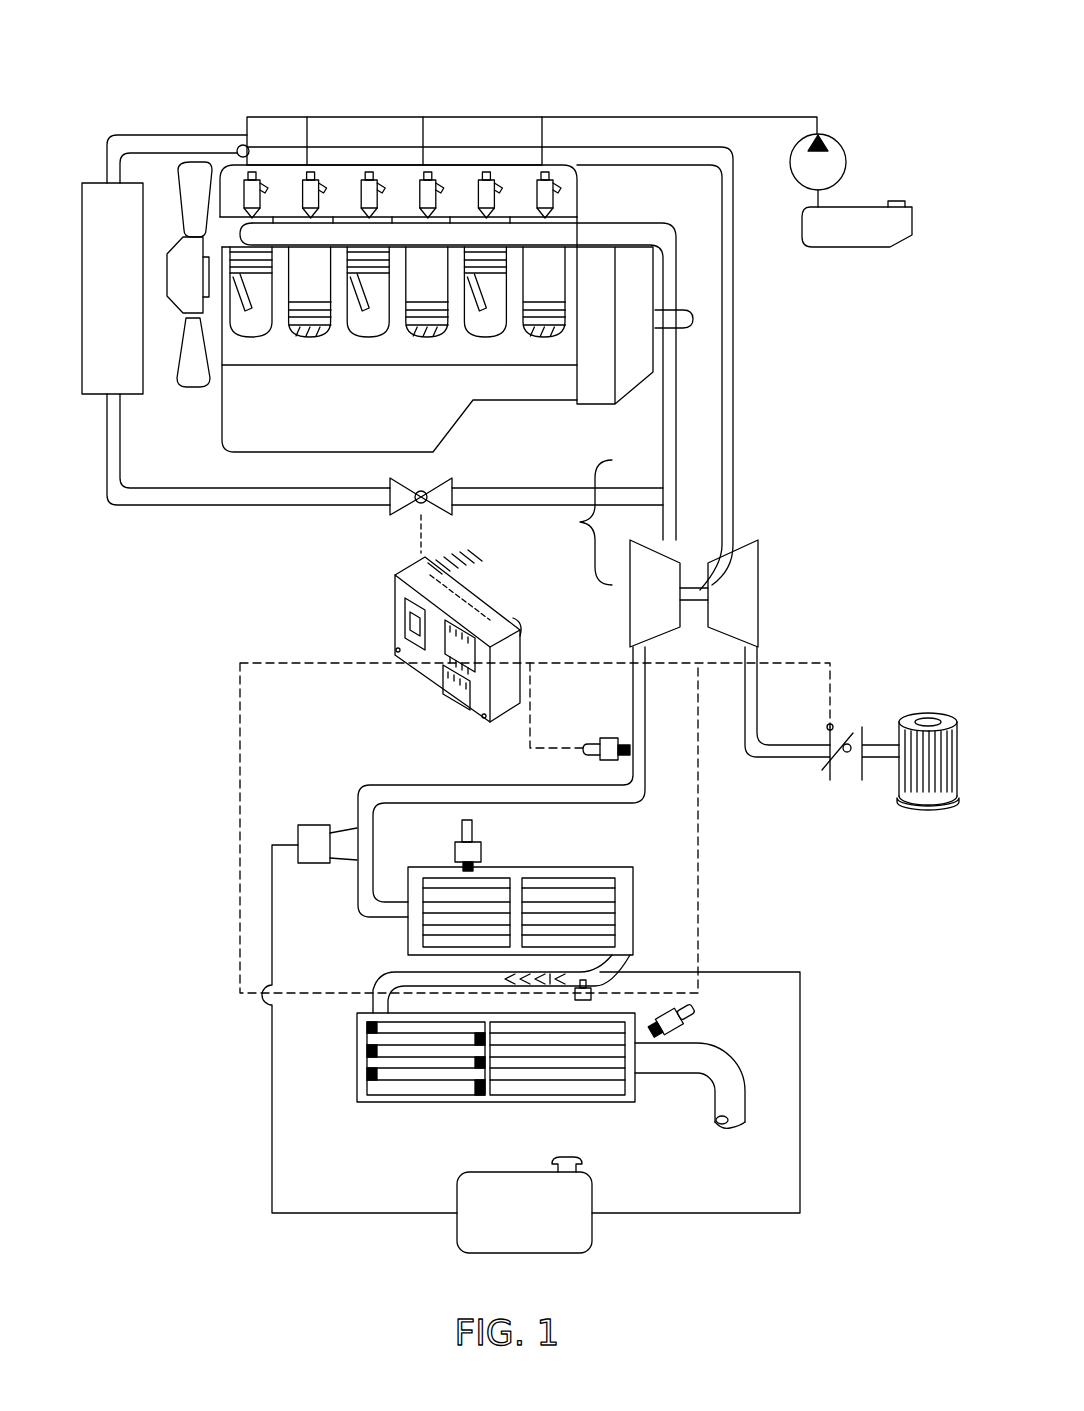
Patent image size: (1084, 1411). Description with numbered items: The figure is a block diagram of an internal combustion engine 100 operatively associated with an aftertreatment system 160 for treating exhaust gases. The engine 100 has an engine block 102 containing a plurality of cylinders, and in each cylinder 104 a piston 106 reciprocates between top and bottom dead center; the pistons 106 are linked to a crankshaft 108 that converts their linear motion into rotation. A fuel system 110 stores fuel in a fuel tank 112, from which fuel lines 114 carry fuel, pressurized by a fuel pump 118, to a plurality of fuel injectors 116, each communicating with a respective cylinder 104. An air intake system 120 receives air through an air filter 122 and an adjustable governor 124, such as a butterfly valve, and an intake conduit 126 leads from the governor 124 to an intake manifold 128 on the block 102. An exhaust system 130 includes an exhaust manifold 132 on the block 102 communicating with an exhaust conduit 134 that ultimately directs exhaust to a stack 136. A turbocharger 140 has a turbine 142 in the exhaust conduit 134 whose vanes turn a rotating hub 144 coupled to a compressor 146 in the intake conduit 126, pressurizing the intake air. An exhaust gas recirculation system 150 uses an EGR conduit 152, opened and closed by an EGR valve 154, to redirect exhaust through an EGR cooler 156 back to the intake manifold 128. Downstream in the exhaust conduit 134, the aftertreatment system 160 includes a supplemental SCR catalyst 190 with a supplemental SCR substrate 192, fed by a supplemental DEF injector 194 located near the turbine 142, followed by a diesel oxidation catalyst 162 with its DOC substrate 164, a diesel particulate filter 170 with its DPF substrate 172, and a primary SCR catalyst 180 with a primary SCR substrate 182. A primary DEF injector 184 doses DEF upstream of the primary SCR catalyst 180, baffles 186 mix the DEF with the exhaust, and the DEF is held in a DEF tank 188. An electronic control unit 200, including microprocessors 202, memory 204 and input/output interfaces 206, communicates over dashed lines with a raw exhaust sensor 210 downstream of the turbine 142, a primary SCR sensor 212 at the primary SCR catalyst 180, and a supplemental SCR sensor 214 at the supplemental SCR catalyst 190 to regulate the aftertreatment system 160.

The internal combustion engine 100 is at (440, 93).
The engine block 102 is at (502, 355).
The cylinder 104 is at (185, 390).
The piston 106 is at (360, 305).
The crankshaft 108 is at (695, 325).
The fuel system 110 is at (835, 38).
The fuel tank 112 is at (875, 205).
The fuel lines 114 is at (664, 117).
The fuel injectors 116 is at (367, 172).
The fuel pump 118 is at (838, 138).
The air intake system 120 is at (762, 452).
The air filter 122 is at (928, 720).
The adjustable governor 124 is at (850, 742).
The intake conduit 126 is at (737, 410).
The intake manifold 128 is at (283, 152).
The exhaust system 130 is at (574, 522).
The exhaust manifold 132 is at (572, 235).
The exhaust conduit 134 is at (663, 470).
The stack 136 is at (703, 1075).
The turbocharger 140 is at (615, 602).
The turbine 142 is at (653, 600).
The rotating hub 144 is at (712, 572).
The compressor 146 is at (745, 592).
The exhaust gas recirculation (EGR) system 150 is at (55, 490).
The EGR conduit 152 is at (155, 135).
The EGR valve 154 is at (388, 512).
The EGR cooler 156 is at (82, 285).
The aftertreatment system 160 is at (705, 825).
The diesel oxidation catalyst (DOC) 162 is at (620, 917).
The DOC substrate 164 is at (580, 876).
The diesel particulate filter (DPF) 170 is at (357, 1088).
The DPF substrate 172 is at (418, 1087).
The primary SCR catalyst 180 is at (617, 1104).
The primary SCR substrate 182 is at (555, 1087).
The primary DEF injector 184 is at (593, 988).
The baffles 186 is at (507, 992).
The DEF tank 188 is at (505, 1226).
The supplemental SCR catalyst 190 is at (405, 888).
The supplemental SCR substrate 192 is at (437, 928).
The supplemental DEF injector 194 is at (322, 825).
The electronic control unit (ECU) 200 is at (478, 585).
The microprocessors 202 is at (408, 650).
The memory 204 is at (495, 670).
The input/output interfaces 206 is at (455, 700).
The raw exhaust sensor 210 is at (600, 742).
The primary SCR sensor 212 is at (690, 1022).
The supplemental SCR sensor 214 is at (483, 845).